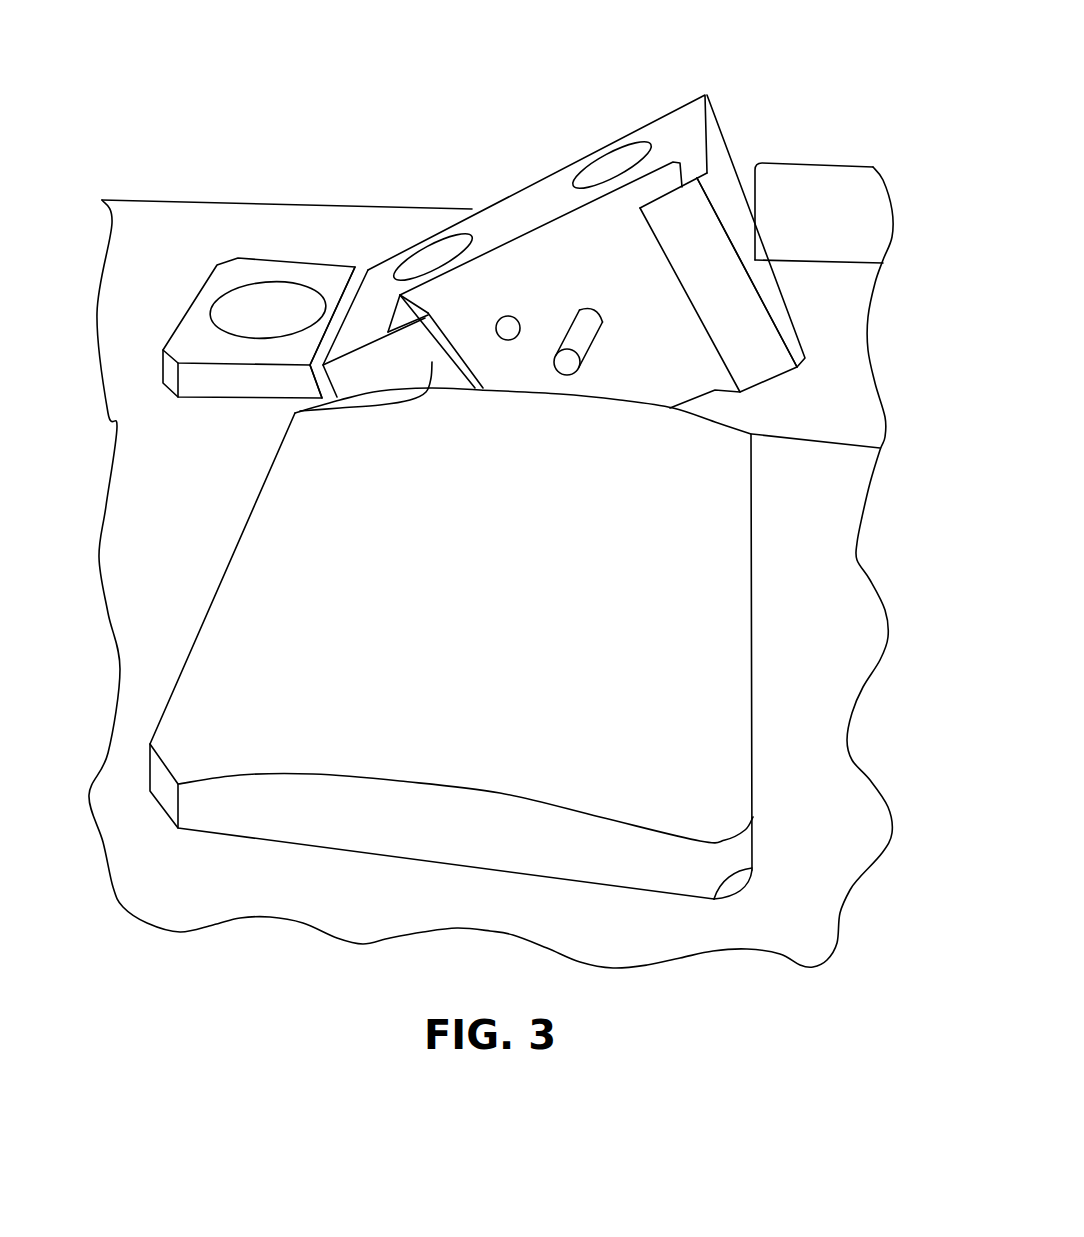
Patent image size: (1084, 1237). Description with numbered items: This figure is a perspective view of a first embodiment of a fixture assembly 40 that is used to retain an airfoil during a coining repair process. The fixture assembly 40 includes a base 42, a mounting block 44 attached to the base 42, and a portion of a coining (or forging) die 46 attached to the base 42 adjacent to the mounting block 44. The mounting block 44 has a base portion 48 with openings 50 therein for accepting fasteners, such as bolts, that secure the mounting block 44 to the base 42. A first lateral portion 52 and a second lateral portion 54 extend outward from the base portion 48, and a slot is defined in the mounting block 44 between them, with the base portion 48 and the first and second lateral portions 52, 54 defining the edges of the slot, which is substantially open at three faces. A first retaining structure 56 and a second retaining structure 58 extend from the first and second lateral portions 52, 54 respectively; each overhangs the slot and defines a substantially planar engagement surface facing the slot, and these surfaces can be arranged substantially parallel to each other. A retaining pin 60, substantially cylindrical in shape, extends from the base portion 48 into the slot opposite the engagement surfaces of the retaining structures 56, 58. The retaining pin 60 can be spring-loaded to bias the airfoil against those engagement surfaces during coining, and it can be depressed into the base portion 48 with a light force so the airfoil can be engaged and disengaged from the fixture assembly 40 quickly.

The fixture assembly 40 is at (410, 90).
The base 42 is at (815, 740).
The mounting block 44 is at (563, 163).
The coining die 46 is at (705, 614).
The base portion 48 is at (508, 214).
The openings 50 is at (433, 253).
The first lateral portion 52 is at (368, 313).
The second lateral portion 54 is at (695, 168).
The first retaining structure 56 is at (295, 413).
The second retaining structure 58 is at (667, 237).
The retaining pin 60 is at (598, 322).